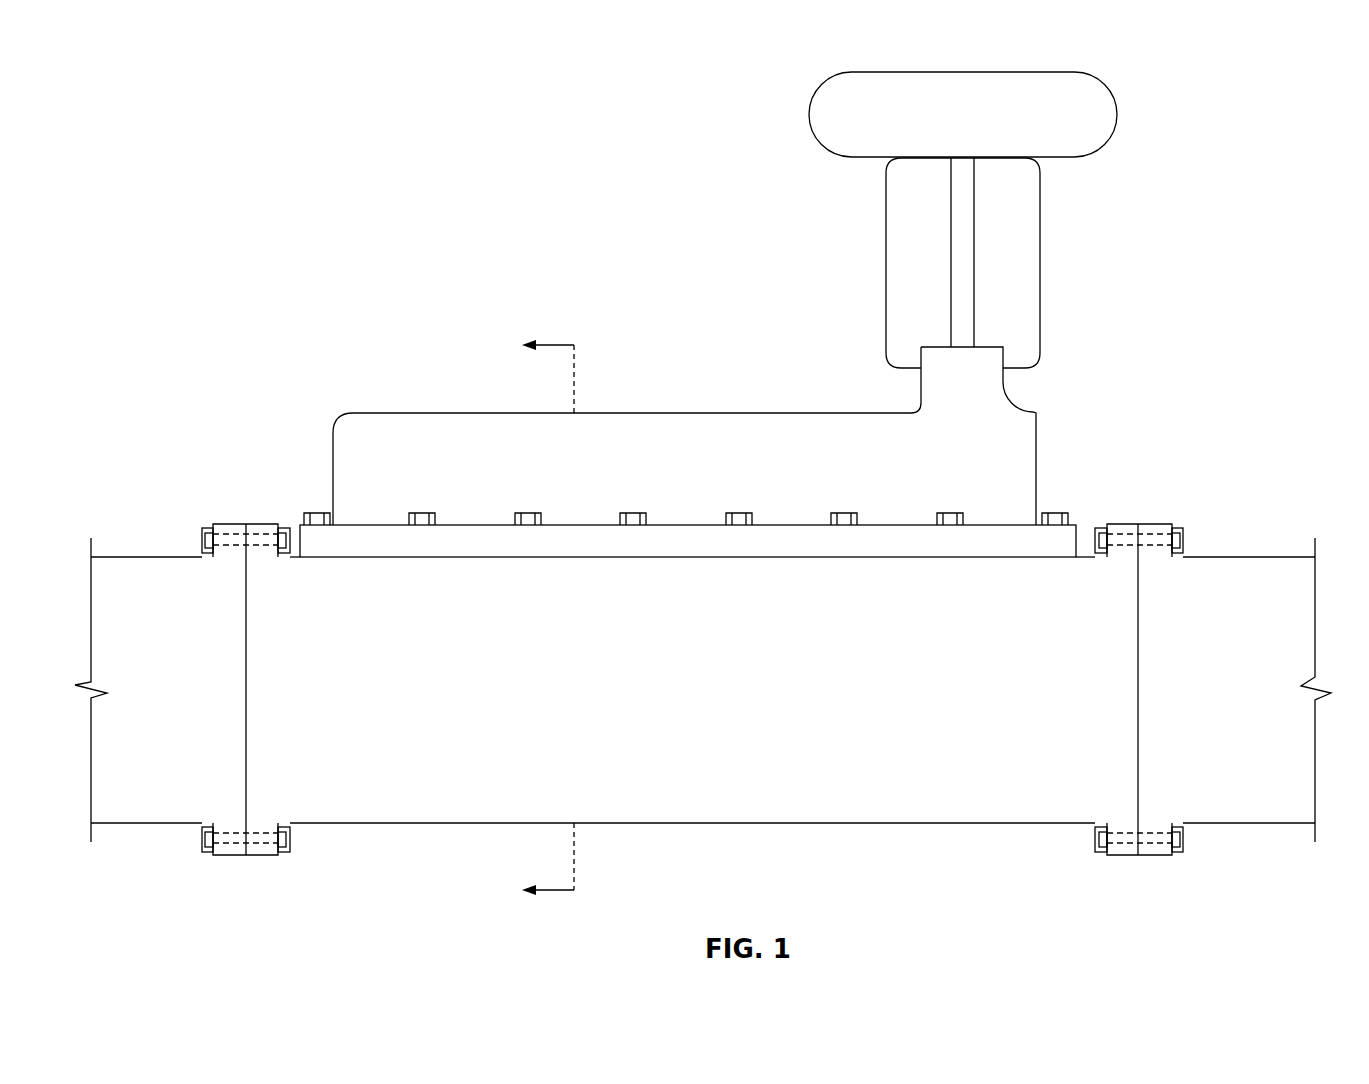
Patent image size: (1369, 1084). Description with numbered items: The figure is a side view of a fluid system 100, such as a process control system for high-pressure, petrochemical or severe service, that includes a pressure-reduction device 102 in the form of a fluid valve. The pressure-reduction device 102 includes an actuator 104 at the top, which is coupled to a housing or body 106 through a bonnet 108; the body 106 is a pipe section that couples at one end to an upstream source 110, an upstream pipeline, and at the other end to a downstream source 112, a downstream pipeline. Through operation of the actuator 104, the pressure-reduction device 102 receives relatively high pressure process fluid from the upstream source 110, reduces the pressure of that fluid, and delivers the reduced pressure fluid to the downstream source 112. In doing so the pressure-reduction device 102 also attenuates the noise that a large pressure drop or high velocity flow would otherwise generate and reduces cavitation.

The fluid system 100 is at (158, 80).
The pressure-reduction device 102 is at (430, 150).
The actuator 104 is at (898, 72).
The body 106 is at (982, 823).
The bonnet 108 is at (398, 413).
The upstream source 110 is at (1208, 557).
The downstream source 112 is at (147, 823).